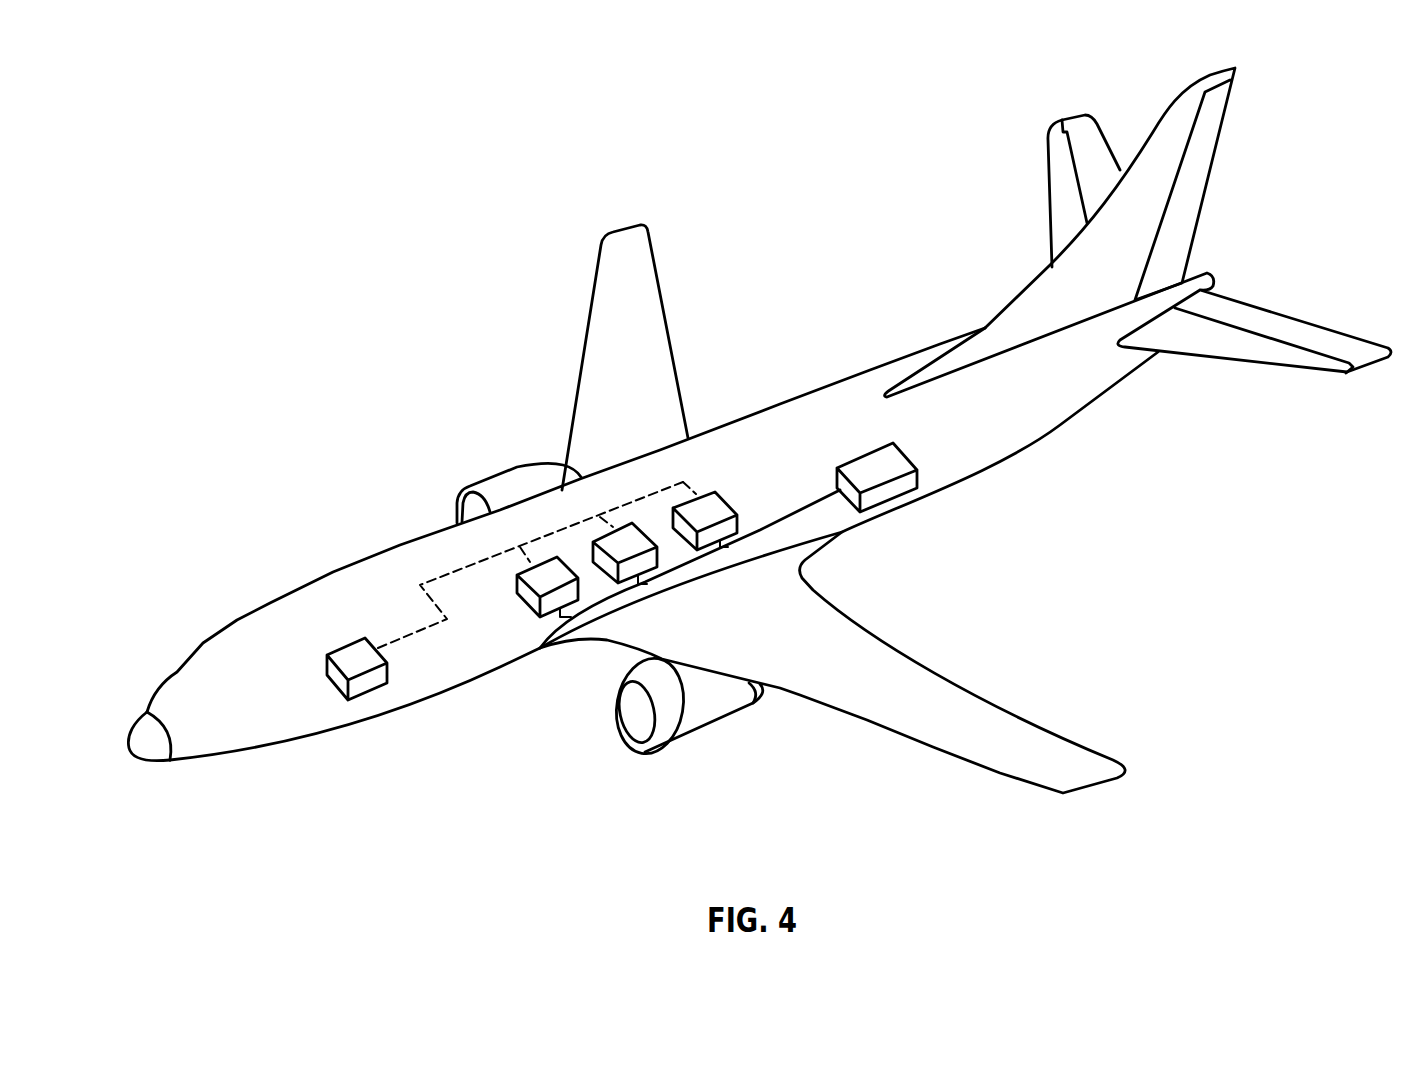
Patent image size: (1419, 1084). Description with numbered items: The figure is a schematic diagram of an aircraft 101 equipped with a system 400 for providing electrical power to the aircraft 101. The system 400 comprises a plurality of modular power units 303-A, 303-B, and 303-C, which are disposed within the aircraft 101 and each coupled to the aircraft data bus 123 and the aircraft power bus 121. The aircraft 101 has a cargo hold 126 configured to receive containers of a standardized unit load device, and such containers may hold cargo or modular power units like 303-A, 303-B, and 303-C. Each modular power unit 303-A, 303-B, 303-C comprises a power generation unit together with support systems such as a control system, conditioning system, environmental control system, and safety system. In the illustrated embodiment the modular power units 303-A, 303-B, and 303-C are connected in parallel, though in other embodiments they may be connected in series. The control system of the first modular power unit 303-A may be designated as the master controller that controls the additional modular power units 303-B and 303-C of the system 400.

The system for providing electrical power 400 is at (206, 247).
The aircraft 101 is at (177, 672).
The cargo hold 126 is at (785, 428).
The data bus 123 is at (353, 653).
The modular power unit 303-A is at (527, 602).
The modular power unit 303-B is at (620, 543).
The modular power unit 303-C is at (707, 503).
The power bus 121 is at (888, 470).